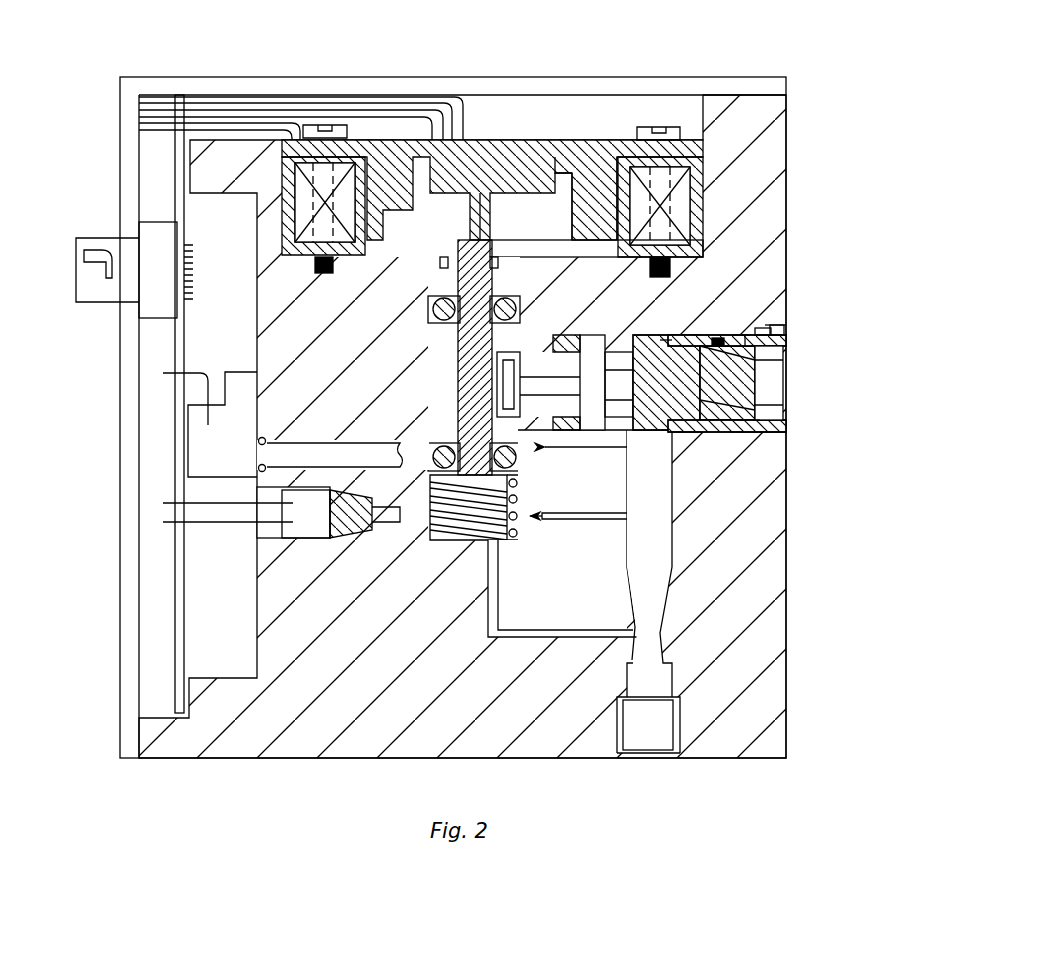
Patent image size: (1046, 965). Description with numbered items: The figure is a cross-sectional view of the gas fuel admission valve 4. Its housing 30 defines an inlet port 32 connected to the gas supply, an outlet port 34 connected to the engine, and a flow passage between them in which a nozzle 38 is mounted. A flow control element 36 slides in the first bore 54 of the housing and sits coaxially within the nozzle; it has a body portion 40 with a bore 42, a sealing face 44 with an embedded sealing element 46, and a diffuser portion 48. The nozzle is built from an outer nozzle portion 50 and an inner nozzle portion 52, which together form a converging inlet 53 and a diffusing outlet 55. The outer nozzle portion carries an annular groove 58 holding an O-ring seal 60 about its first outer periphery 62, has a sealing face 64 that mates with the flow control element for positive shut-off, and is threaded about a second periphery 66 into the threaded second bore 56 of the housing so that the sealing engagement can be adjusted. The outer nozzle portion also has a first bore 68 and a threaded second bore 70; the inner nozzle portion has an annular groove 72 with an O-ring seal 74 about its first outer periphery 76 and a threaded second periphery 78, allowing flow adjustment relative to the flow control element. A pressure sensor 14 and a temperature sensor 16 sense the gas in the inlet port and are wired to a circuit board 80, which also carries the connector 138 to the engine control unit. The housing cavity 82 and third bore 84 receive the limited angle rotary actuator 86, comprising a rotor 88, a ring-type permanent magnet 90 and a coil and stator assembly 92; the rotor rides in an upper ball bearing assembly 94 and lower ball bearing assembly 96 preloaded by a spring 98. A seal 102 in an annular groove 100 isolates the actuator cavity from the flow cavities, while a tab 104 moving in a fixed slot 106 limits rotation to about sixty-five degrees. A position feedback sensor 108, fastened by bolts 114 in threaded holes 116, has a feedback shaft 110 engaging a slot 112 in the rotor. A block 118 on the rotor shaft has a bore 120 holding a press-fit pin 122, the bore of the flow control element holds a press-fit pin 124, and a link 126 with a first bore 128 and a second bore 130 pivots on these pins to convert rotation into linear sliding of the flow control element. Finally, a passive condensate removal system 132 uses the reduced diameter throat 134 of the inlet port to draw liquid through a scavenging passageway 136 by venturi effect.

The gas fuel admission valve 4 is at (655, 50).
The gas supply pressure sensor 14 is at (202, 447).
The temperature sensor 16 is at (306, 524).
The housing 30 is at (310, 740).
The inlet port 32 is at (652, 760).
The outlet port 34 is at (783, 410).
The flow control element 36 is at (780, 388).
The nozzle 38 is at (797, 348).
The body portion 40 is at (573, 336).
The bore 42 is at (607, 333).
The sealing face 44 is at (615, 437).
The sealing element 46 is at (653, 437).
The diffuser portion 48 is at (783, 407).
The outer nozzle portion 50 is at (788, 340).
The inner nozzle portion 52 is at (792, 350).
The converging inlet 53 is at (710, 383).
The first bore 54 is at (538, 336).
The diffusing outlet 55 is at (777, 370).
The threaded second bore 56 is at (786, 337).
The annular groove 58 is at (718, 338).
The O-ring seal 60 is at (736, 334).
The first outer periphery 62 is at (748, 334).
The sealing face 64 is at (665, 340).
The second periphery 66 is at (772, 332).
The first bore 68 is at (750, 440).
The threaded second bore 70 is at (790, 427).
The annular groove 72 is at (717, 440).
The O-ring seal 74 is at (738, 447).
The first outer periphery 76 is at (708, 400).
The second periphery 78 is at (773, 447).
The circuit board 80 is at (178, 590).
The cavity 82 is at (705, 195).
The third bore 84 is at (430, 335).
The limited angle rotary actuator 86 is at (715, 210).
The rotor 88 is at (583, 180).
The ring-type permanent magnet 90 is at (605, 190).
The coil and stator assembly 92 is at (690, 232).
The upper ball bearing assembly 94 is at (436, 312).
The lower ball bearing assembly 96 is at (428, 487).
The spring 98 is at (452, 540).
The annular groove 100 is at (497, 265).
The seal 102 is at (520, 306).
The tab 104 is at (387, 265).
The fixed slot 106 is at (372, 262).
The position feedback sensor 108 is at (470, 185).
The feedback shaft 110 is at (512, 200).
The slot 112 is at (480, 217).
The bolts 114 is at (668, 127).
The threaded holes 116 is at (707, 257).
The block 118 is at (345, 436).
The bore 120 is at (500, 365).
The press-fit pin 122 is at (500, 407).
The press-fit pin 124 is at (602, 364).
The link 126 is at (505, 380).
The first bore 128 is at (522, 432).
The bore 130 is at (597, 403).
The passive condensate removal system 132 is at (567, 648).
The reduced diameter throat 134 is at (670, 632).
The scavenging passageway 136 is at (523, 633).
The connector 138 is at (98, 302).